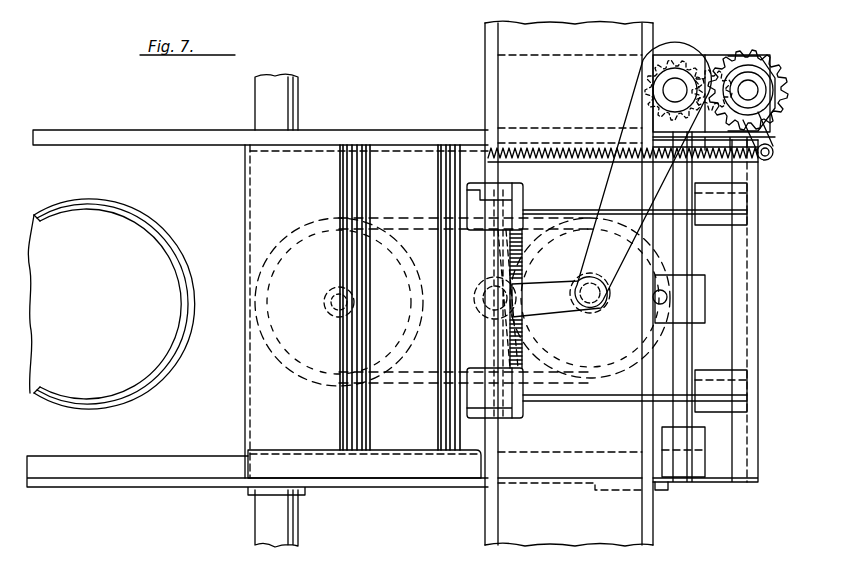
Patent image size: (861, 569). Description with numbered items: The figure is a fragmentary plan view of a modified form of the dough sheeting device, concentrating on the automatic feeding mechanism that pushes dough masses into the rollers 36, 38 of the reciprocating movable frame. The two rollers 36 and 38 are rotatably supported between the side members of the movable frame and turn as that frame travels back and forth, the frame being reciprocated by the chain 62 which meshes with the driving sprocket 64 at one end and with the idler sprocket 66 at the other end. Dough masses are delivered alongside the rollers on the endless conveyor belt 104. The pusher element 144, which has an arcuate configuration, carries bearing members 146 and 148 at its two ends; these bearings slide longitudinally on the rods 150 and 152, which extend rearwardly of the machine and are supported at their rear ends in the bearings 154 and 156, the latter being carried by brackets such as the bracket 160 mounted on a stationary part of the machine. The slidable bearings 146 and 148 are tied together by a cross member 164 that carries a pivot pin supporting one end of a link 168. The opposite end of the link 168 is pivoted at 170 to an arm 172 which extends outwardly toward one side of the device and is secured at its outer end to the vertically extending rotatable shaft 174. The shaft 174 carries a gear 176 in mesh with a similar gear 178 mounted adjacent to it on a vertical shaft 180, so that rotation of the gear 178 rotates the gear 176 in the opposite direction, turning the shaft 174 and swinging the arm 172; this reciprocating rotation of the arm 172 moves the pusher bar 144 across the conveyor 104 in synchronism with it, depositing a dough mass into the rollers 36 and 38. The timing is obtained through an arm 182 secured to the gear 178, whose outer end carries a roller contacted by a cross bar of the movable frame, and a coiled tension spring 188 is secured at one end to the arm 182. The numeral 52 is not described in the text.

The roller 36 is at (245, 417).
The roller 38 is at (425, 447).
The rail 52 is at (397, 482).
The chain 62 is at (398, 388).
The driving sprocket 64 is at (396, 217).
The idler sprocket 66 is at (588, 395).
The endless conveyor belt 104 is at (626, 538).
The pusher element 144 is at (528, 330).
The bearing member 146 is at (478, 183).
The bearing member 148 is at (520, 420).
The rod 150 is at (578, 199).
The rod 152 is at (622, 402).
The bearing 154 is at (748, 190).
The bearing 156 is at (750, 372).
The bracket 160 is at (482, 309).
The cross member 164 is at (525, 250).
The link 168 is at (530, 291).
The pivot 170 is at (600, 312).
The arm 172 is at (626, 160).
The vertical rotatable shaft 174 is at (668, 90).
The gear 176 is at (683, 57).
The gear 178 is at (770, 65).
The vertical shaft 180 is at (746, 88).
The arm 182 is at (771, 132).
The coiled tension spring 188 is at (548, 148).